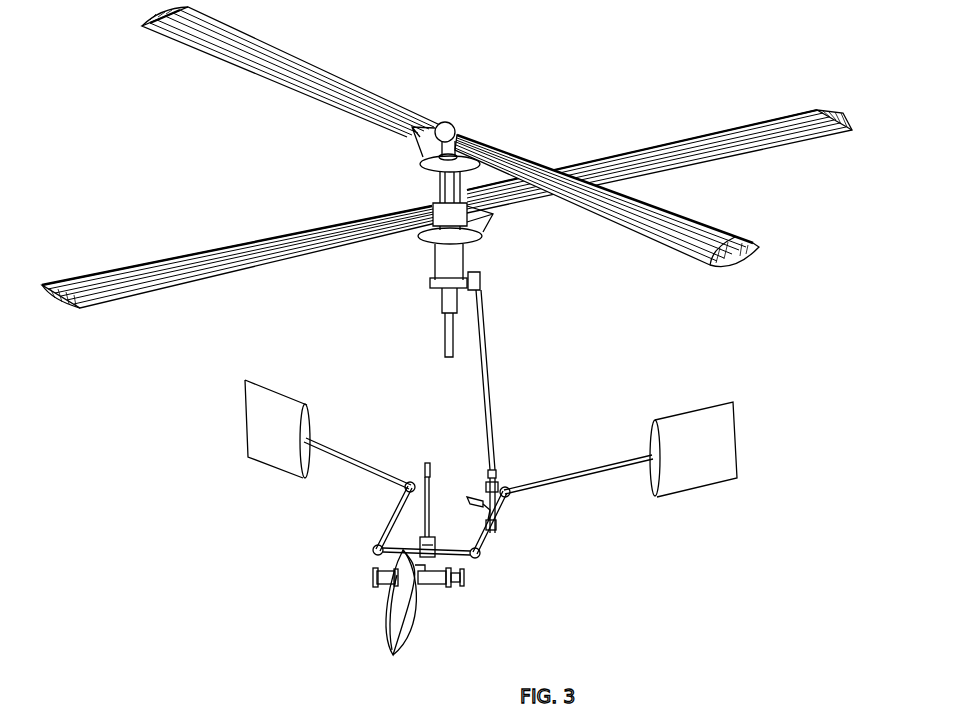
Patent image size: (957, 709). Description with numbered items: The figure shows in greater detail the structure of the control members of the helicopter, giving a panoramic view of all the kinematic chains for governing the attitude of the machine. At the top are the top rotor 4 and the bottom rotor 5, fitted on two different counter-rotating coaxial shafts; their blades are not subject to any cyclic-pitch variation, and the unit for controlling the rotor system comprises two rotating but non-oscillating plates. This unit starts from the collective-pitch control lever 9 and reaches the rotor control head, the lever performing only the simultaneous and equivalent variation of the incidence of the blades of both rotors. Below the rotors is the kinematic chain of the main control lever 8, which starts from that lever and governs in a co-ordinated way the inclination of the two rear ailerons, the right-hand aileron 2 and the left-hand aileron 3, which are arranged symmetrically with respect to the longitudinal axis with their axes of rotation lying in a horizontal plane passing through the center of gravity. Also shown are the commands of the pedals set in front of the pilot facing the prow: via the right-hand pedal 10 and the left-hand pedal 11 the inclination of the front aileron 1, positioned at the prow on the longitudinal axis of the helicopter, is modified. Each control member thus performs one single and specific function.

The front aileron 1 is at (407, 632).
The right-hand aileron 2 is at (280, 383).
The left-hand aileron 3 is at (695, 412).
The top rotor 4 is at (467, 123).
The bottom rotor 5 is at (421, 196).
The control lever 8 is at (425, 490).
The collective-pitch control lever 9 is at (480, 498).
The right-hand pedal 10 is at (387, 577).
The left-hand pedal 11 is at (452, 580).